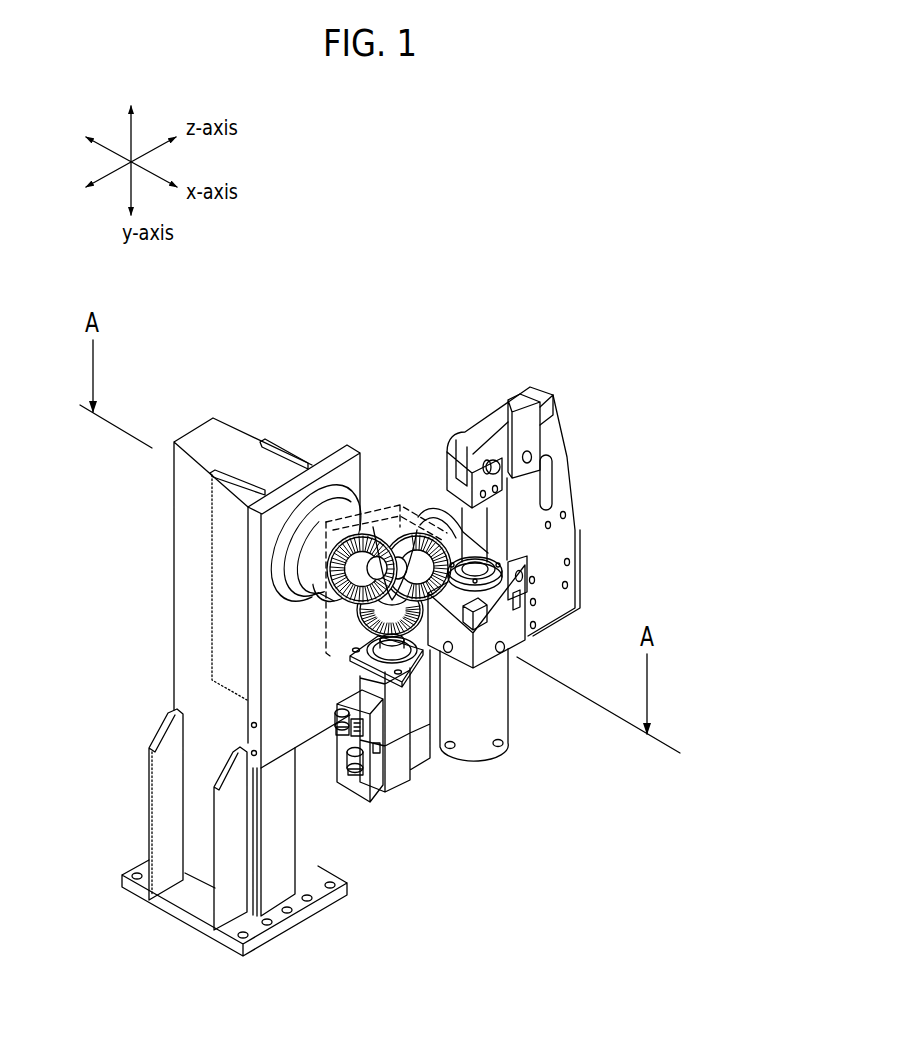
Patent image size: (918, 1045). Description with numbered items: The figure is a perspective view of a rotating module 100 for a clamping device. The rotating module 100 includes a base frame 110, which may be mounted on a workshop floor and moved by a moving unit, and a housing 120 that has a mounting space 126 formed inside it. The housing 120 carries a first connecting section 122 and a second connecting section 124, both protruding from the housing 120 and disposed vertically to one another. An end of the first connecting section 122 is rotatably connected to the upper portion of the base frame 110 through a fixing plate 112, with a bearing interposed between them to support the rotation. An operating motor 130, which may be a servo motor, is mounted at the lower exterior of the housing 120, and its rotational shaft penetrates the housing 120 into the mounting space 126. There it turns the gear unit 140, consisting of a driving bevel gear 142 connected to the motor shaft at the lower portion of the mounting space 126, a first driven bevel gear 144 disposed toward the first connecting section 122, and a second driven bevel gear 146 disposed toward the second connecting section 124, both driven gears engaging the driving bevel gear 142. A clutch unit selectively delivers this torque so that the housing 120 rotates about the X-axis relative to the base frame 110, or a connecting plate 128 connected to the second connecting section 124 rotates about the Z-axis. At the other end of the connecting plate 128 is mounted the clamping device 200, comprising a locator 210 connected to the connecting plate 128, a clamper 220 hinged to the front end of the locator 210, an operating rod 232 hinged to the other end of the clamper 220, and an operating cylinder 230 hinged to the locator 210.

The rotating module 100 is at (247, 341).
The base frame 110 is at (183, 585).
The fixing plate 112 is at (284, 527).
The housing 120 is at (323, 632).
The first connecting section 122 is at (303, 553).
The second connecting section 124 is at (445, 505).
The mounting space 126 is at (352, 632).
The connecting plate 128 is at (584, 608).
The operating motor 130 is at (415, 770).
The gear unit 140 is at (418, 365).
The driving bevel gear 142 is at (373, 527).
The first driven bevel gear 144 is at (385, 512).
The second driven bevel gear 146 is at (417, 530).
The clamping device 200 is at (520, 700).
The locator 210 is at (560, 532).
The clamper 220 is at (532, 387).
The operating cylinder 230 is at (492, 720).
The operating rod 232 is at (482, 536).